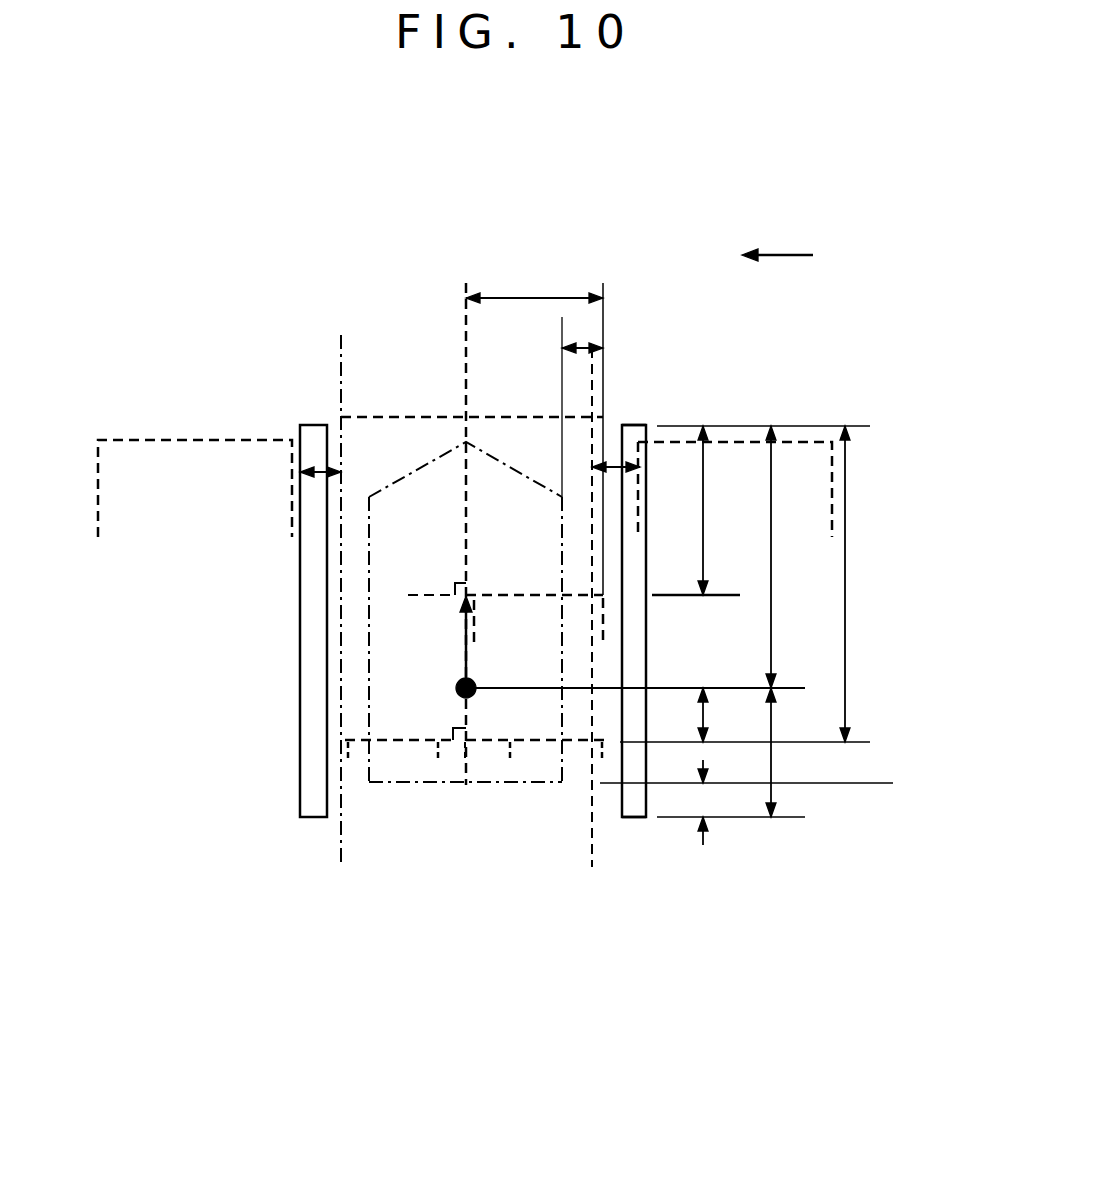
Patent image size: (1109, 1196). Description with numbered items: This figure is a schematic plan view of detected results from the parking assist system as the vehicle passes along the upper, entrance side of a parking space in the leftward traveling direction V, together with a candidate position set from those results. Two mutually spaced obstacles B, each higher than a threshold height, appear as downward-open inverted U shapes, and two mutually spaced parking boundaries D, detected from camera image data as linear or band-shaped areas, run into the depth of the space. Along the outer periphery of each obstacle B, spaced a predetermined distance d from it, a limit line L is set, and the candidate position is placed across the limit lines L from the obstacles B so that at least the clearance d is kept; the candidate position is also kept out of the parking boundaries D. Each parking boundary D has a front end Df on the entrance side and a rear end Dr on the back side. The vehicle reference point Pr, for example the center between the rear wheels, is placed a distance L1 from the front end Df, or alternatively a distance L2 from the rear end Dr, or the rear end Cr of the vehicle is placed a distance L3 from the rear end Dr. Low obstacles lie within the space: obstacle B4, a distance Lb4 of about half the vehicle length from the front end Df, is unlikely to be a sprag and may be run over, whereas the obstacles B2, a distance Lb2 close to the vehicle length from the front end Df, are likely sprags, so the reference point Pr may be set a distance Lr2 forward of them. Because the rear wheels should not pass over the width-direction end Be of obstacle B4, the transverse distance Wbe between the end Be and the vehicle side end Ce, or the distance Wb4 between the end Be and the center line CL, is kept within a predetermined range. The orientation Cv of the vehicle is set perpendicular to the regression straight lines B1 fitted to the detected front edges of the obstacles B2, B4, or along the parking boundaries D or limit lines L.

The obstacle B is at (143, 440).
The parking boundary D is at (313, 558).
The predetermined distance d is at (313, 472).
The limit line L is at (341, 840).
The center line CL is at (466, 368).
The end of the vehicle in the vehicle width direction Ce is at (540, 497).
The distance in the transverse direction Wb4 is at (534, 287).
The distance in the transverse direction Wbe is at (580, 345).
The front end of the parking boundary Df is at (636, 425).
The rear end of the parking boundary Dr is at (633, 820).
The straight line B1 is at (418, 590).
The obstacle B2 is at (398, 745).
The obstacle B4 is at (510, 590).
The rear end of the vehicle Cr is at (502, 797).
The reference point Pr is at (456, 686).
The orientation Cv is at (451, 642).
The end of the obstacle in the vehicle width direction Be is at (603, 627).
The distance in the longitudinal direction Lb4 is at (723, 510).
The distance L1 is at (786, 557).
The distance Lb2 is at (867, 584).
The distance L2 is at (786, 752).
The distance Lr2 is at (707, 712).
The distance L3 is at (700, 802).
The traveling direction V is at (777, 244).